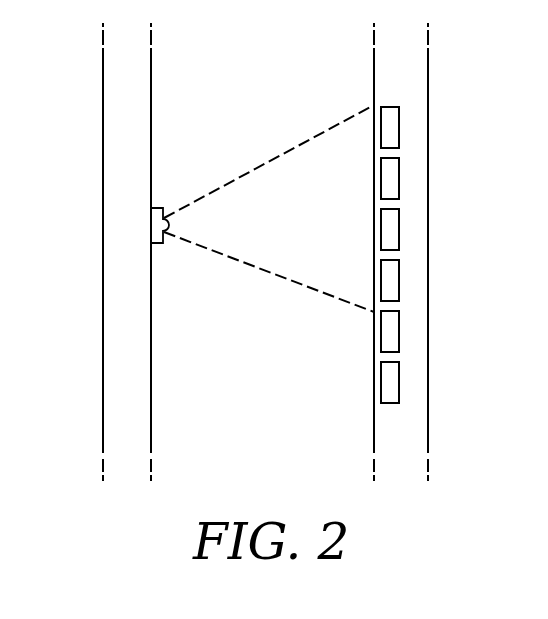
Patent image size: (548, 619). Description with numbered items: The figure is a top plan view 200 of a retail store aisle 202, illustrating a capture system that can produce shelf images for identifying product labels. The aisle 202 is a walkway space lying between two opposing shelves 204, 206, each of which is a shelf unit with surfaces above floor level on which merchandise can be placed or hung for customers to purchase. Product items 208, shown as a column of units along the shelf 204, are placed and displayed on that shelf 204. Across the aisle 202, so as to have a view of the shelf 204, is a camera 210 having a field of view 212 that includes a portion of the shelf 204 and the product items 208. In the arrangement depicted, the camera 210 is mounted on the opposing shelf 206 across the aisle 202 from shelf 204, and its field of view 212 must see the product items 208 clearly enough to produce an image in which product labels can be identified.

The top plan view 200 is at (506, 350).
The retail store aisle 202 is at (268, 78).
The shelf 204 is at (428, 92).
The opposing shelf 206 is at (103, 186).
The product items 208 is at (399, 126).
The camera 210 is at (157, 207).
The field of view 212 is at (292, 150).